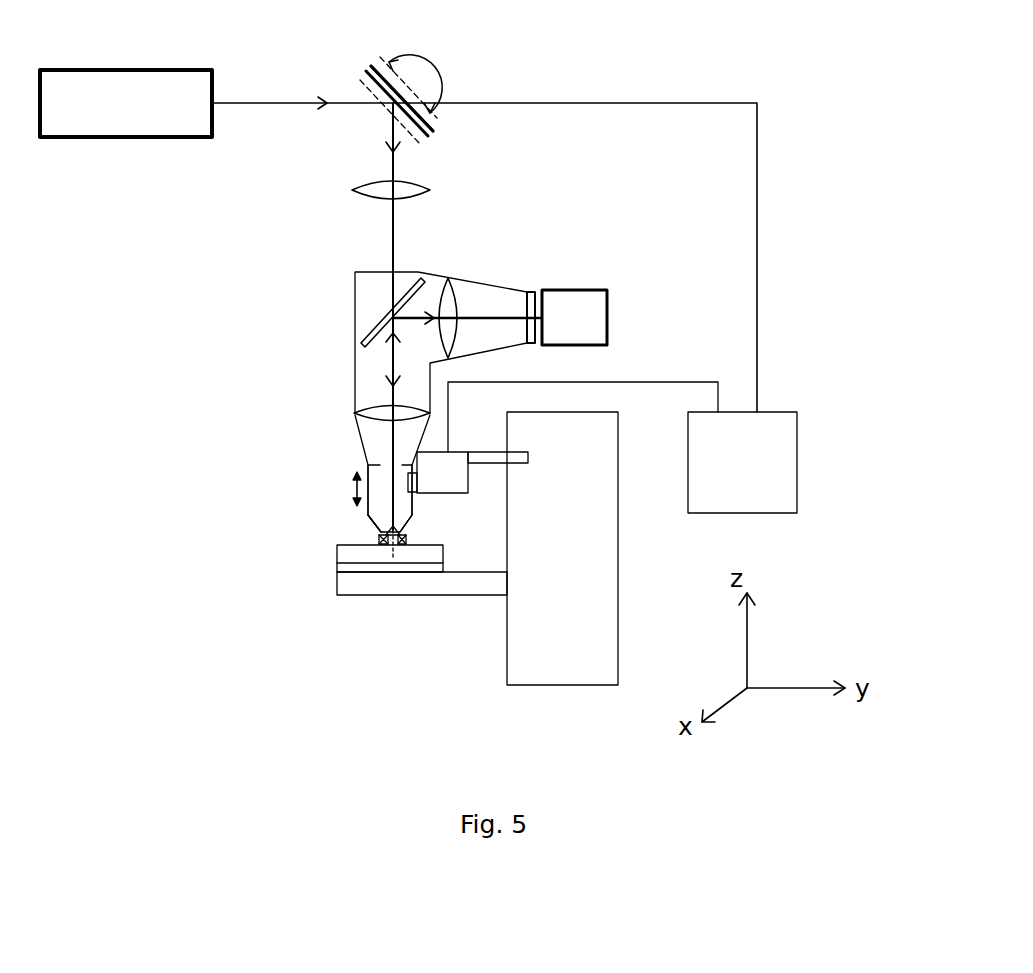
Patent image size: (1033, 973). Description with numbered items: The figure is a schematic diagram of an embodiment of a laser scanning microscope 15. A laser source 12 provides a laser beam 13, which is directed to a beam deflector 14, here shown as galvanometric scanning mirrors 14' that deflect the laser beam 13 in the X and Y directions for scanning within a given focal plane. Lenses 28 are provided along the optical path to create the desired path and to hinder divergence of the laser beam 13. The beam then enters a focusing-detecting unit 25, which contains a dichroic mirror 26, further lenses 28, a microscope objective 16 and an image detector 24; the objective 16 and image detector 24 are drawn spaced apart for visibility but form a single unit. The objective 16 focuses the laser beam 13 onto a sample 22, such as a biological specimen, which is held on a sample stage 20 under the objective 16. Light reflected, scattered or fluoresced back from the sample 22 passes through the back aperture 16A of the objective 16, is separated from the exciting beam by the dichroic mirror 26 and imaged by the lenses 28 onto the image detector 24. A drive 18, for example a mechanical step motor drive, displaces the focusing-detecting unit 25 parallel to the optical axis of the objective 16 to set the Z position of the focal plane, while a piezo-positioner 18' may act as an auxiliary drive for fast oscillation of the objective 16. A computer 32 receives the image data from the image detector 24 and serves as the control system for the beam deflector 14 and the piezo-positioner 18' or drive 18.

The laser source 12 is at (122, 137).
The laser beam 13 is at (282, 105).
The beam deflector 14 is at (440, 93).
The galvanometric scanning mirrors 14' is at (438, 102).
The laser scanning microscope 15 is at (318, 462).
The microscope objective 16 is at (363, 520).
The back aperture 16A is at (370, 467).
The drive 18 is at (567, 533).
The piezo-positioner 18' is at (452, 506).
The sample stage 20 is at (410, 597).
The sample 22 is at (338, 567).
The image detector 24 is at (575, 288).
The focusing-detecting unit 25 is at (338, 257).
The dichroic mirror 26 is at (373, 327).
The lenses 28 is at (427, 197).
The computer 32 is at (775, 410).